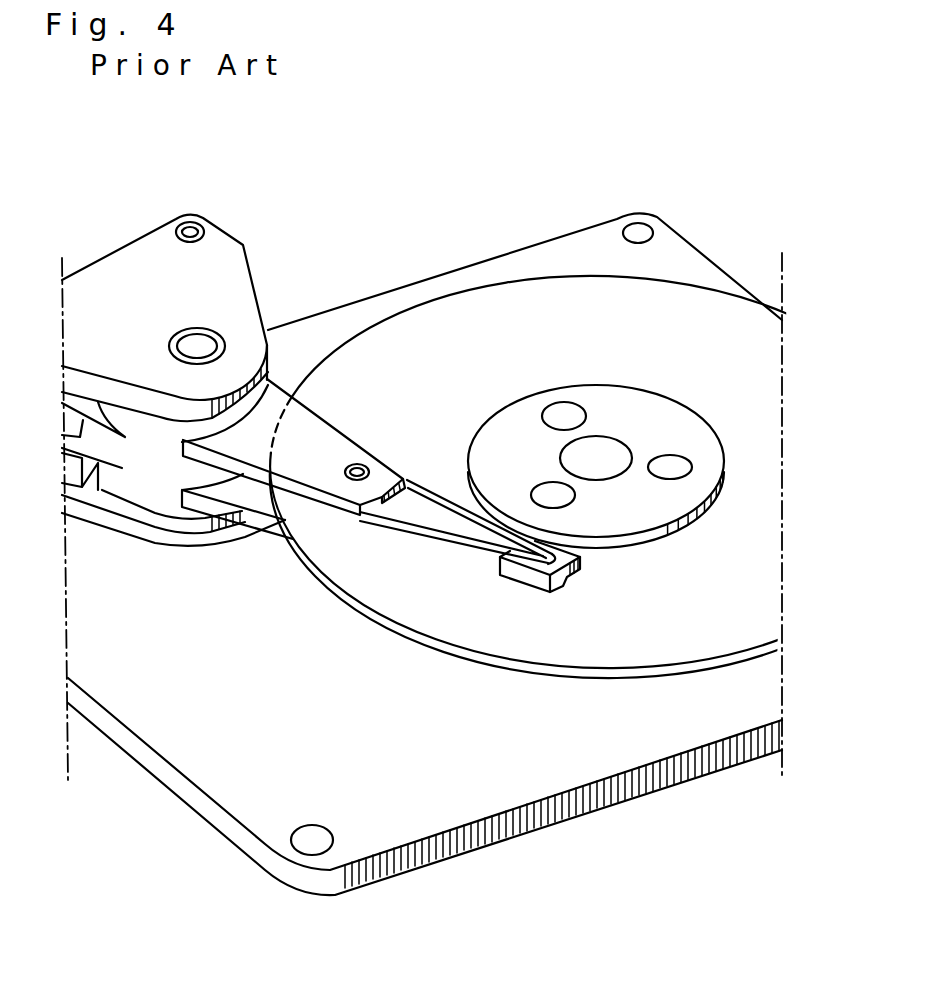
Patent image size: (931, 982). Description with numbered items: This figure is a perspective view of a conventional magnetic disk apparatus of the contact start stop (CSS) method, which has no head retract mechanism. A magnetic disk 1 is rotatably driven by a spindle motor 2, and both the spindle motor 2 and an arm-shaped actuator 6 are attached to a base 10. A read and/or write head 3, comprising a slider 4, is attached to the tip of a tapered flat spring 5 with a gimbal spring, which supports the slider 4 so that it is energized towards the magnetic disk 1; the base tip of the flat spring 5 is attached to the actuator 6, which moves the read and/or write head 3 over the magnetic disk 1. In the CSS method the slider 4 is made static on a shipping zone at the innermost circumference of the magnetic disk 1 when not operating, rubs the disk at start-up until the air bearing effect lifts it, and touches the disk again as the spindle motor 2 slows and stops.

The magnetic disk 1 is at (558, 680).
The spindle motor 2 is at (616, 437).
The read and/or write head 3 is at (512, 576).
The slider 4 is at (582, 565).
The tapered flat spring 5 is at (452, 500).
The actuator 6 is at (261, 300).
The base 10 is at (483, 837).